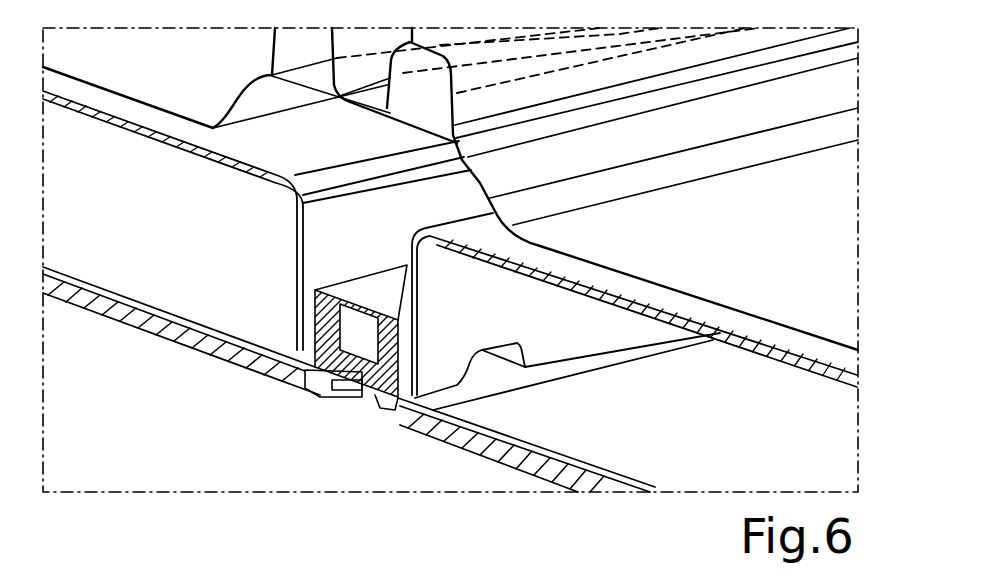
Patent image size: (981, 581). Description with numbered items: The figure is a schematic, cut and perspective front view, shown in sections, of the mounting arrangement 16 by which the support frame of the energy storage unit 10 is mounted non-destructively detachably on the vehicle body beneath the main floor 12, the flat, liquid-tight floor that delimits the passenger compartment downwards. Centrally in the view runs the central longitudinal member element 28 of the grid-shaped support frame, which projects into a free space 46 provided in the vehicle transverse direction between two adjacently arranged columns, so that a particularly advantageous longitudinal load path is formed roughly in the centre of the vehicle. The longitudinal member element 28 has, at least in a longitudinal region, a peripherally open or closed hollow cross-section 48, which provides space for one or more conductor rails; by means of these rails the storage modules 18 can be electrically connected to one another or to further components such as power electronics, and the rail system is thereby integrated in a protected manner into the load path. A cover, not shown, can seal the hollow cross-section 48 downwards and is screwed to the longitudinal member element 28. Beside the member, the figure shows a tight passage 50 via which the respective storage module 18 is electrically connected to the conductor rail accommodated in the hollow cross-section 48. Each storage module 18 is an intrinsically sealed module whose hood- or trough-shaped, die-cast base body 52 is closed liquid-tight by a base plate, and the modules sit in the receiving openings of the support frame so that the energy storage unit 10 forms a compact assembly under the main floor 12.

The energy storage unit 10 is at (523, 470).
The main floor 12 is at (830, 268).
The mounting arrangement 16 is at (133, 341).
The storage module 18 is at (217, 303).
The central longitudinal member element 28 is at (380, 400).
The free space 46 is at (375, 250).
The hollow cross-section 48 is at (320, 398).
The tight passage 50 is at (487, 370).
The base body 52 is at (125, 128).